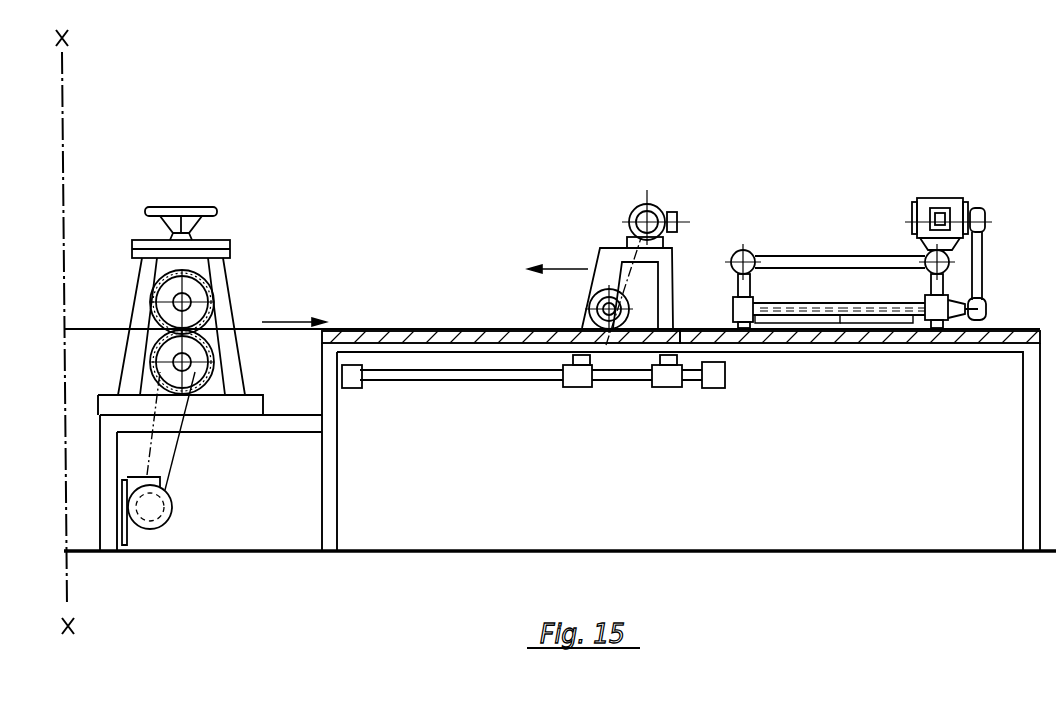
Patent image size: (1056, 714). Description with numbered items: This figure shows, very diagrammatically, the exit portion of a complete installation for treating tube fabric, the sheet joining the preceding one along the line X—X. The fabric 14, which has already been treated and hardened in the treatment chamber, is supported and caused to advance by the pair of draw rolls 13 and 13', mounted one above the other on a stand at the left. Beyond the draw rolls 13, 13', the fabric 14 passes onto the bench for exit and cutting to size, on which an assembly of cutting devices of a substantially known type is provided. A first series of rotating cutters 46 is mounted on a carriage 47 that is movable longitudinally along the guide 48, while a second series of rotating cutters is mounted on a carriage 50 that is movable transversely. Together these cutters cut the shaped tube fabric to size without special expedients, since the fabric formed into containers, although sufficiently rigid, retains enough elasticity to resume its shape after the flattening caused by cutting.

The draw roll 13 is at (199, 437).
The draw roll 13' is at (200, 301).
The fabric 14 is at (90, 328).
The rotating cutters 46 is at (588, 300).
The carriage 47 is at (665, 258).
The guide 48 is at (617, 378).
The carriage 50 is at (803, 256).